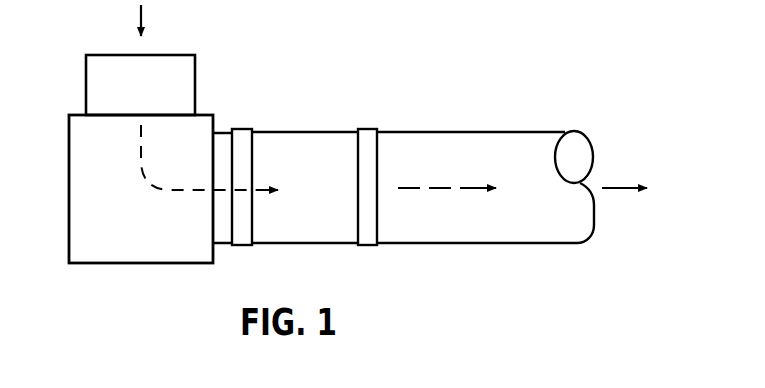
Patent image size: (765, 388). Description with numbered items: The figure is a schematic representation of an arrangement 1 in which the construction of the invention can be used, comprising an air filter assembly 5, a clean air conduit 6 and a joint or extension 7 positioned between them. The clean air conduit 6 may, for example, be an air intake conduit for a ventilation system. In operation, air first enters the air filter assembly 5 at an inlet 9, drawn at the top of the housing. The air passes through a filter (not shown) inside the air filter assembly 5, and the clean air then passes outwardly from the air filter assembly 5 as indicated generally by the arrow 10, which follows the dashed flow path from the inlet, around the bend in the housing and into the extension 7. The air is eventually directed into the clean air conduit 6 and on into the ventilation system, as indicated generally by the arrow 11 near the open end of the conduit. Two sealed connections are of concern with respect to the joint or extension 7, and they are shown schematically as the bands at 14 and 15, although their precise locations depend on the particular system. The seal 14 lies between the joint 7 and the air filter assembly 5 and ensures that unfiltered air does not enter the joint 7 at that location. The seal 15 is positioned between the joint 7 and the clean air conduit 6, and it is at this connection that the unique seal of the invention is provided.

The arrangement 1 is at (313, 101).
The air filter assembly 5 is at (90, 263).
The clean air conduit 6 is at (476, 243).
The joint or extension 7 is at (300, 243).
The inlet 9 is at (176, 63).
The arrow 10 is at (243, 190).
The arrow 11 is at (468, 188).
The seal 14 is at (243, 127).
The seal 15 is at (370, 127).